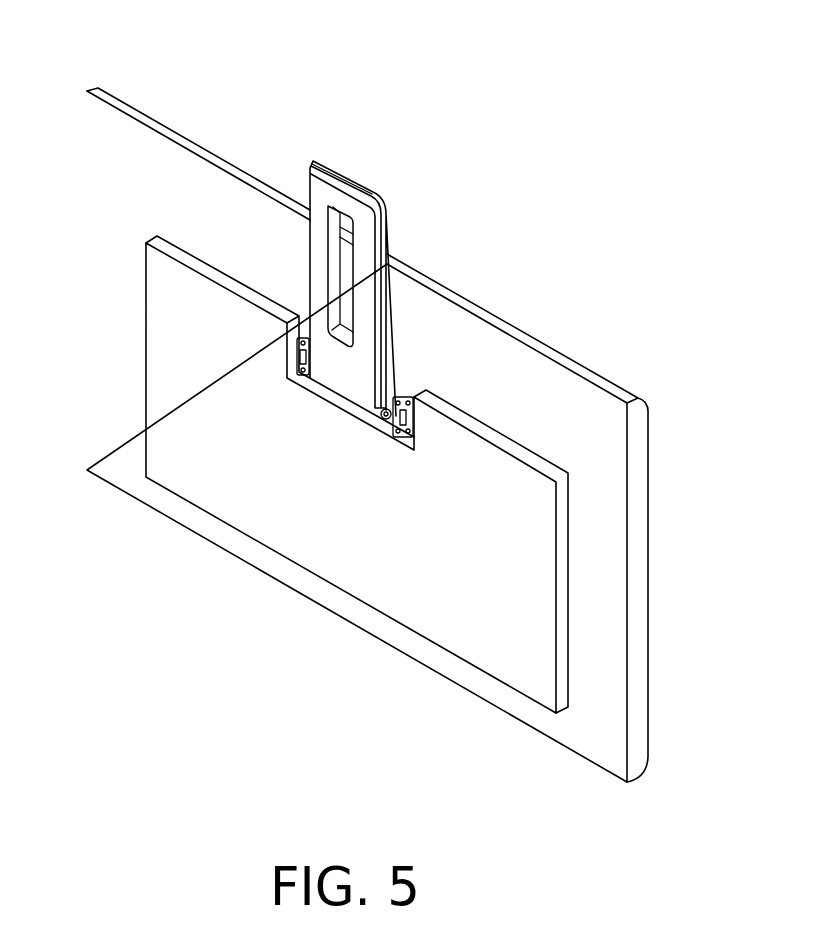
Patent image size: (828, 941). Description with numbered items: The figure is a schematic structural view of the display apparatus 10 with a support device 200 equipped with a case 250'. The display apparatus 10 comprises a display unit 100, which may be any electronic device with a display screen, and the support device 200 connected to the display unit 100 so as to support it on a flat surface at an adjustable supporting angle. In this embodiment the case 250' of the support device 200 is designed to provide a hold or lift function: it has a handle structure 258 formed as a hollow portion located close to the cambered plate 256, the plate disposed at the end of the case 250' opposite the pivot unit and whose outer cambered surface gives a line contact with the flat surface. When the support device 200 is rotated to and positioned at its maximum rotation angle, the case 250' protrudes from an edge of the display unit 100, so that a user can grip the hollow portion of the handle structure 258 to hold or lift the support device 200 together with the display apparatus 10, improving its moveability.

The display apparatus 10 is at (620, 68).
The display unit 100 is at (532, 373).
The support device 200 is at (373, 255).
The case 250' is at (348, 245).
The cambered plate 256 is at (338, 190).
The handle structure 258 is at (345, 250).